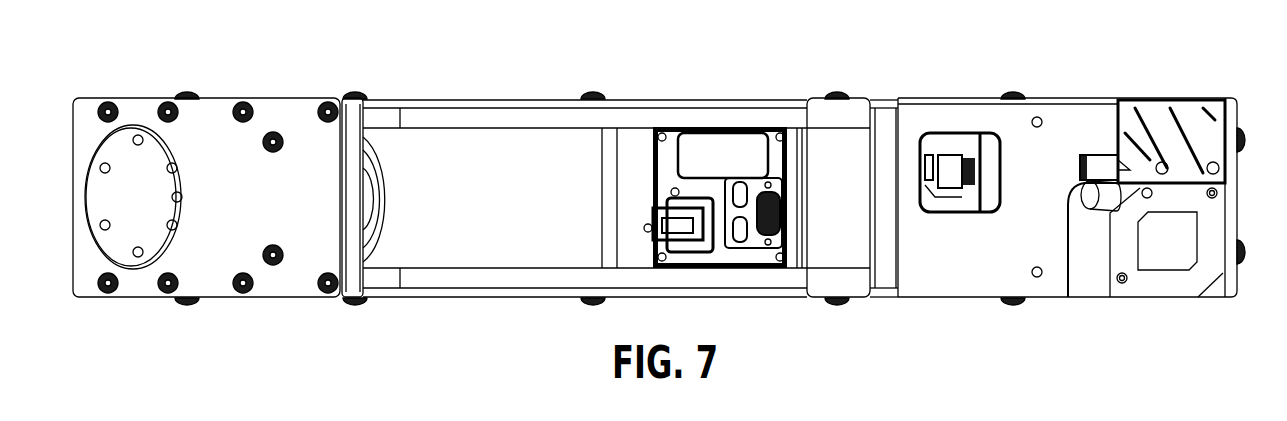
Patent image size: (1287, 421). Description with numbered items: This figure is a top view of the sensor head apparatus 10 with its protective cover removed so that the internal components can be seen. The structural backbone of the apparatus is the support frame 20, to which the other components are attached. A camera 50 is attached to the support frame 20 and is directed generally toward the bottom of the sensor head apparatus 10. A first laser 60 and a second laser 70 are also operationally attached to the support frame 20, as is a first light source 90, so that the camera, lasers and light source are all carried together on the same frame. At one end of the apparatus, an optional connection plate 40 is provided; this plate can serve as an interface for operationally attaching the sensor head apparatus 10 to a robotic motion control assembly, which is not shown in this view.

The sensor head apparatus 10 is at (772, 93).
The support frame 20 is at (437, 120).
The connection plate 40 is at (135, 172).
The camera 50 is at (730, 257).
The first laser 60 is at (1168, 260).
The second laser 70 is at (1158, 130).
The first light source 90 is at (378, 178).